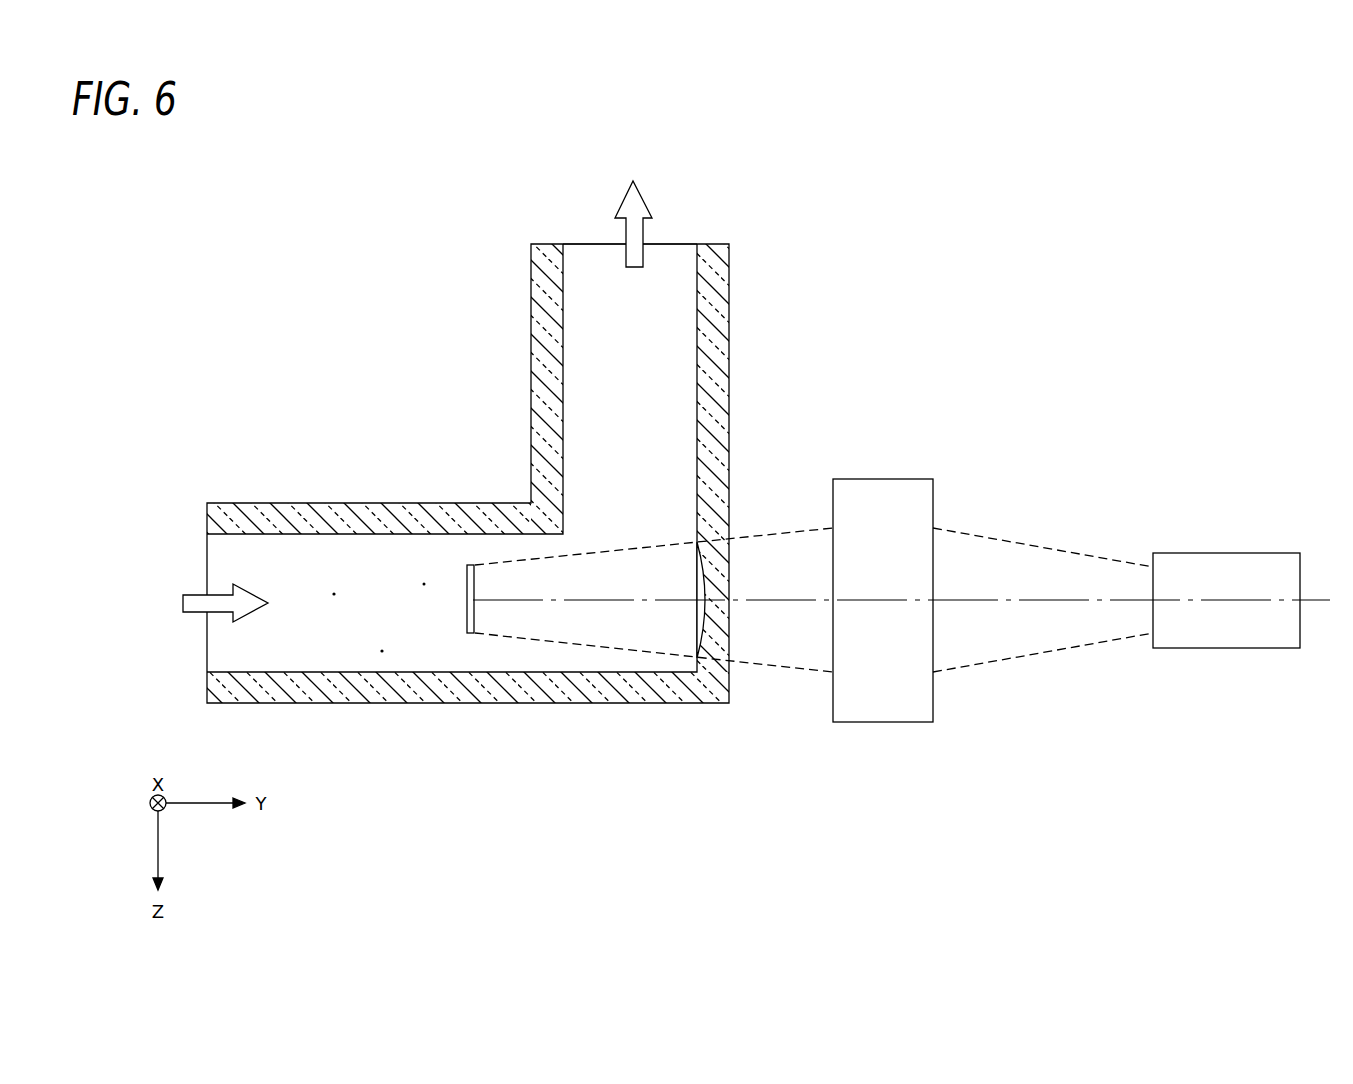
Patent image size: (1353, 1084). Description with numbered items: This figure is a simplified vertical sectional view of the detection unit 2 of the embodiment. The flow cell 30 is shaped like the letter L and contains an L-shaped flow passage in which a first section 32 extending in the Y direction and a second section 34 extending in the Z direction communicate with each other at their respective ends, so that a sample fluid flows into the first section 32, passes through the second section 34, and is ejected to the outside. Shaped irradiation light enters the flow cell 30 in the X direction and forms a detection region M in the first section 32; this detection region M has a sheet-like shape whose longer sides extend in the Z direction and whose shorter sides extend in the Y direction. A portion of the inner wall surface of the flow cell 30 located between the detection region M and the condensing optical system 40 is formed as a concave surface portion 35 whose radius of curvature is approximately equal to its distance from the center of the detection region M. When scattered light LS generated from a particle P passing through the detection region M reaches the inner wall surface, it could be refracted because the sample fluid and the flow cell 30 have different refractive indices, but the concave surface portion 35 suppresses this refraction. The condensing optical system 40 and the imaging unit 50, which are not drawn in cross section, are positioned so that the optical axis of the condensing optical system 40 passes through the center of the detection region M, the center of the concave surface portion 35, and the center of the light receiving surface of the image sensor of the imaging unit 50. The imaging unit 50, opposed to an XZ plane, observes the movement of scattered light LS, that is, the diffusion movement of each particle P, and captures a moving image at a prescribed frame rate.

The detection unit 2 is at (1012, 240).
The flow cell 30 is at (729, 295).
The first section 32 is at (357, 568).
The second section 34 is at (668, 387).
The concave surface portion 35 is at (699, 540).
The condensing optical system 40 is at (893, 479).
The imaging unit 50 is at (1262, 553).
The particle P is at (423, 583).
The detection region M is at (467, 635).
The scattered light LS is at (1097, 553).